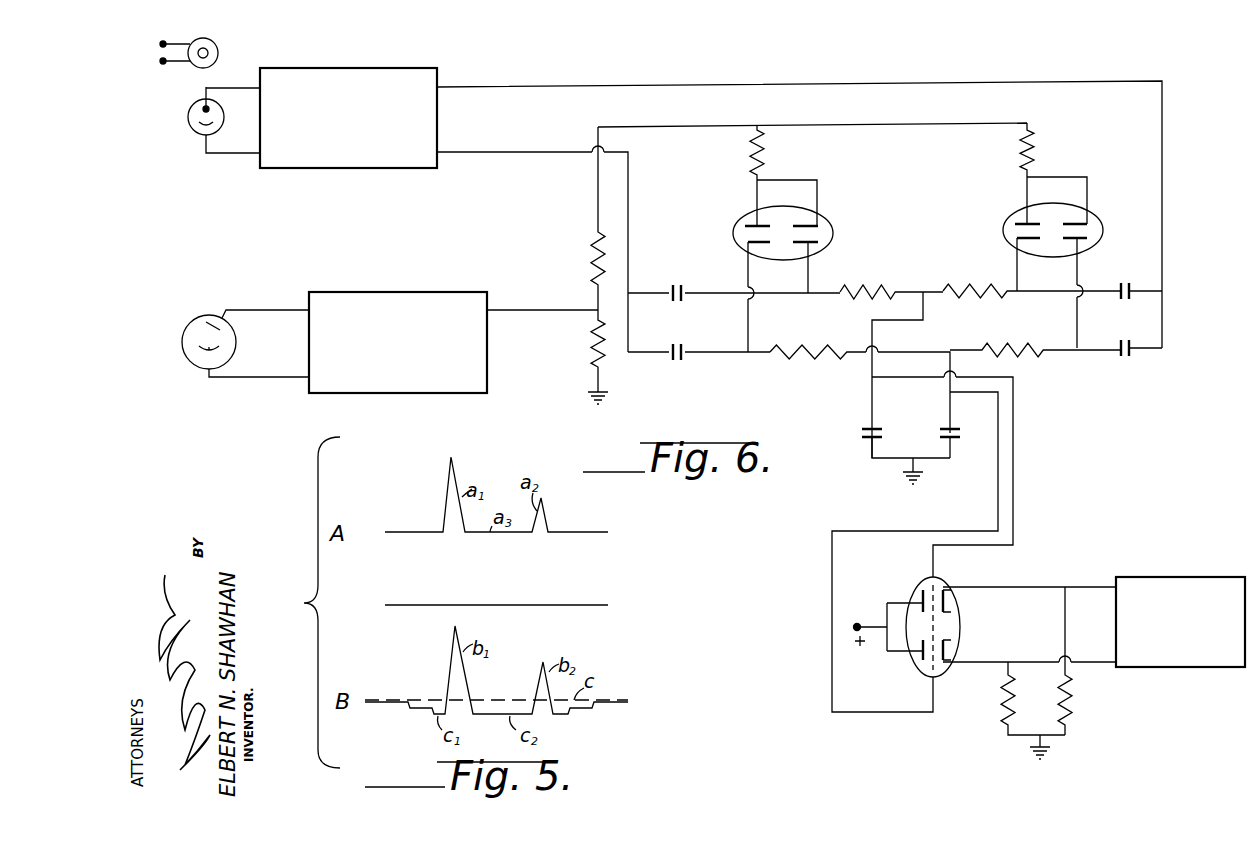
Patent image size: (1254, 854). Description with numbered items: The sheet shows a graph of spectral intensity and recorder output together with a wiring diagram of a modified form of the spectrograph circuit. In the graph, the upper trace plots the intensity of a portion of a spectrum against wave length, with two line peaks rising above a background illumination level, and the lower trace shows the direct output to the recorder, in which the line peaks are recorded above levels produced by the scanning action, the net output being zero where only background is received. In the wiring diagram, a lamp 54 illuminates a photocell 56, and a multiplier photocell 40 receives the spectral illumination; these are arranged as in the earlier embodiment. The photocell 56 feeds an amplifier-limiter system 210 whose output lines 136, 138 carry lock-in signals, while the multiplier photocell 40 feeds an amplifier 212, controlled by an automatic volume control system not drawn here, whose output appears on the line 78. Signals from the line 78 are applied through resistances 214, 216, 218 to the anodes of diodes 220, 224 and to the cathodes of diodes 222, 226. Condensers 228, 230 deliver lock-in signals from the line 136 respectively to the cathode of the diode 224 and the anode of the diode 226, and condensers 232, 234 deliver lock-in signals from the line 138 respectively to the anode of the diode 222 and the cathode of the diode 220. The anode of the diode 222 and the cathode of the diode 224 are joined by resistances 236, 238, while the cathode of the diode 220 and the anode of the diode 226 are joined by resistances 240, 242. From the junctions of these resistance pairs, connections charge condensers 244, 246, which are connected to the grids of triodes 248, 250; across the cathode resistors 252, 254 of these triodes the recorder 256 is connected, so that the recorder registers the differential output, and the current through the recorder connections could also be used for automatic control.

The lamp 54 is at (215, 44).
The photocell 56 is at (191, 127).
The amplifier-limiter system 210 is at (345, 68).
The output line 136 is at (447, 87).
The output line 138 is at (449, 152).
The multiplier photocell 40 is at (197, 316).
The amplifier 212 is at (395, 292).
The line 78 is at (523, 310).
The resistance 214 is at (592, 245).
The resistance 216 is at (762, 158).
The resistance 218 is at (1032, 152).
The diode 220 is at (745, 232).
The diode 222 is at (820, 232).
The diode 224 is at (1014, 230).
The diode 226 is at (1090, 230).
The condenser 228 is at (1130, 280).
The condenser 230 is at (1128, 358).
The condenser 232 is at (676, 285).
The condenser 234 is at (677, 362).
The resistance 236 is at (862, 288).
The resistance 238 is at (985, 284).
The resistance 240 is at (792, 362).
The resistance 242 is at (1028, 358).
The condenser 244 is at (868, 441).
The condenser 246 is at (956, 441).
The triode 248 is at (937, 585).
The triode 250 is at (928, 664).
The cathode resistor 252 is at (1078, 695).
The cathode resistor 254 is at (1002, 701).
The recorder 256 is at (1170, 577).